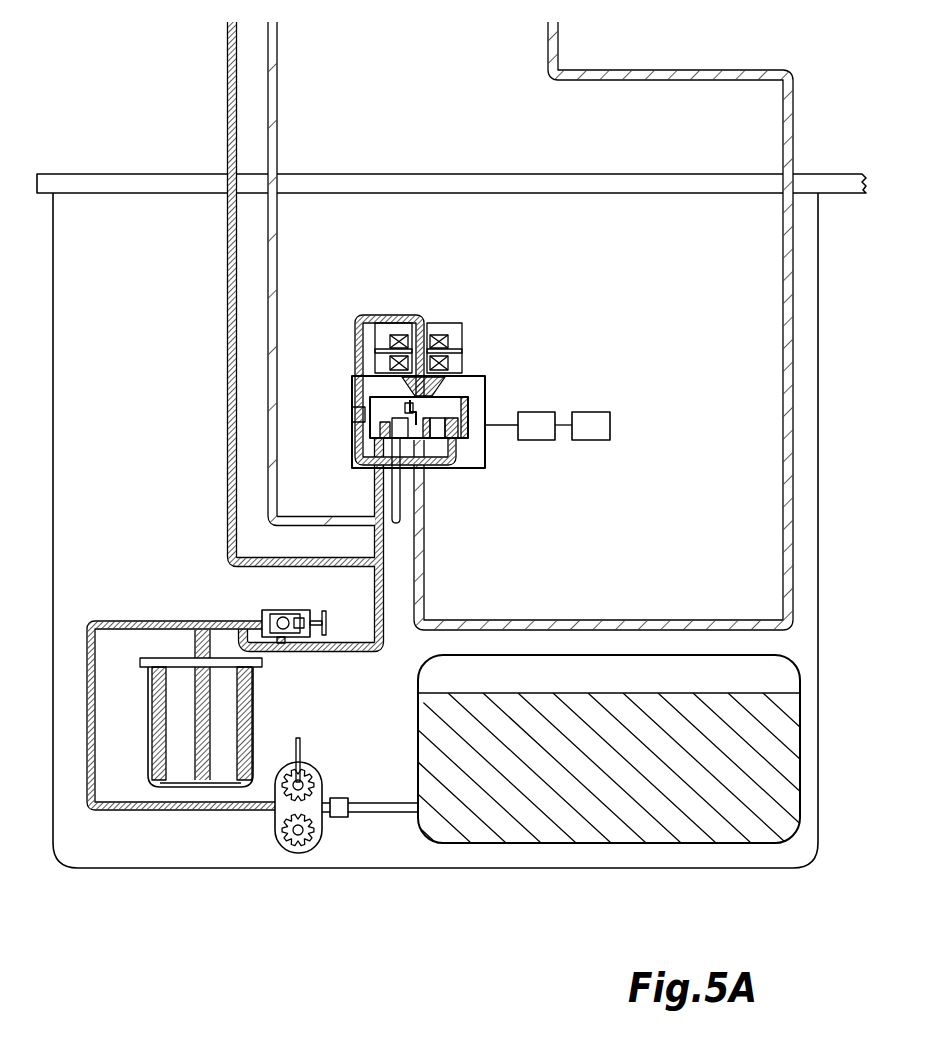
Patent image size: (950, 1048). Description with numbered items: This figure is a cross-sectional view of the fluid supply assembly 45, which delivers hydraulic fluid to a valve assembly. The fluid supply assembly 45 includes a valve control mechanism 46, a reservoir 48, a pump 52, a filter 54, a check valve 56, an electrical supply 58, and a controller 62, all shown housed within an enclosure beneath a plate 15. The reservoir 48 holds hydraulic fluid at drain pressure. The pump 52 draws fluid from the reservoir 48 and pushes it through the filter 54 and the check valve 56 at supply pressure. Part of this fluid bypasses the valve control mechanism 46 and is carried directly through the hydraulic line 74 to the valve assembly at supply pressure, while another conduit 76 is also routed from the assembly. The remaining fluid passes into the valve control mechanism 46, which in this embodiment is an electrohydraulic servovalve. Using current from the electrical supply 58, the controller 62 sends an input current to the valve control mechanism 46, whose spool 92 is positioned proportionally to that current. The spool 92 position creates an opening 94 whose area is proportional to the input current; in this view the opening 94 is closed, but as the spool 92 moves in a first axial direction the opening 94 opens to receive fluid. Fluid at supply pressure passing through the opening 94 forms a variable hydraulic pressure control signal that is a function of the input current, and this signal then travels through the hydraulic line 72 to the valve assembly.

The deck plate 15 is at (832, 186).
The fluid supply assembly 45 is at (838, 397).
The valve control mechanism 46 is at (472, 381).
The reservoir 48 is at (778, 755).
The pump 52 is at (308, 762).
The filter 54 is at (160, 717).
The check valve 56 is at (312, 610).
The electrical supply 58 is at (588, 440).
The controller 62 is at (528, 440).
The hydraulic line 72 is at (278, 273).
The hydraulic line 74 is at (226, 363).
The supply conduit 76 is at (794, 94).
The spool 92 is at (435, 428).
The opening 94 is at (400, 450).